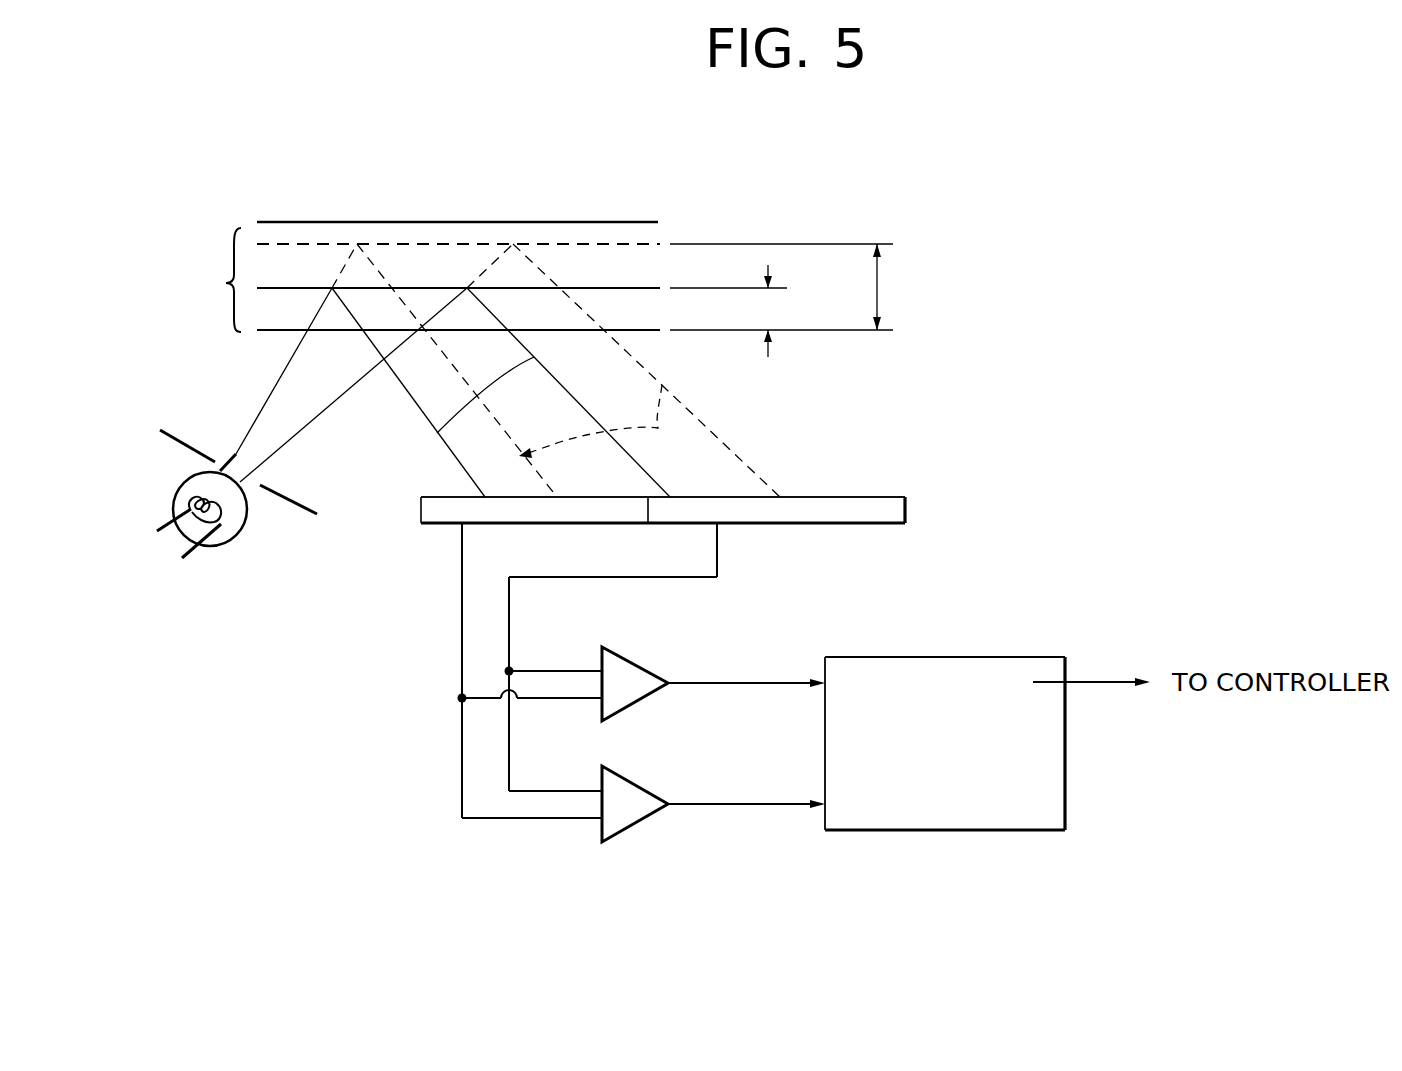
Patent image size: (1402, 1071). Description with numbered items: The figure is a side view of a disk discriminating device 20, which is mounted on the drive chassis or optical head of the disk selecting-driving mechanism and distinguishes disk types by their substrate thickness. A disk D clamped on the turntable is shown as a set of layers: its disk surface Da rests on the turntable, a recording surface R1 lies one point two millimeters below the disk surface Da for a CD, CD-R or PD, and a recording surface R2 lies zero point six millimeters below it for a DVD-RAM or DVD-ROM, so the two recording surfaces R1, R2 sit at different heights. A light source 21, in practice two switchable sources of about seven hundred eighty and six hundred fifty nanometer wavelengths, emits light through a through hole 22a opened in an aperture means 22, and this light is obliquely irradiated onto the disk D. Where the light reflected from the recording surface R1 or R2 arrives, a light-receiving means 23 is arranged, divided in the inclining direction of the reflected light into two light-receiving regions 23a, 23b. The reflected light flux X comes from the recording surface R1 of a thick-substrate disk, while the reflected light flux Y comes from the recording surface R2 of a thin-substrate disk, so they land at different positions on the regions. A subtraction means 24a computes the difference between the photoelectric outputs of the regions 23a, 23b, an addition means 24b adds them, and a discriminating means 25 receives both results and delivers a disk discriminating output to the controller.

The disk discriminating device 20 is at (920, 337).
The light source 21 is at (263, 519).
The aperture means 22 is at (290, 498).
The through hole 22a is at (234, 455).
The light-receiving means 23 is at (717, 551).
The light-receiving region 23a is at (805, 522).
The light-receiving region 23b is at (433, 528).
The subtraction means 24a is at (644, 665).
The addition means 24b is at (644, 782).
The discriminating means 25 is at (897, 657).
The disk D is at (218, 280).
The recording surface R1 is at (638, 243).
The recording surface R2 is at (633, 289).
The disk surface Da is at (572, 333).
The reflected light flux X is at (598, 424).
The reflected light flux Y is at (418, 414).